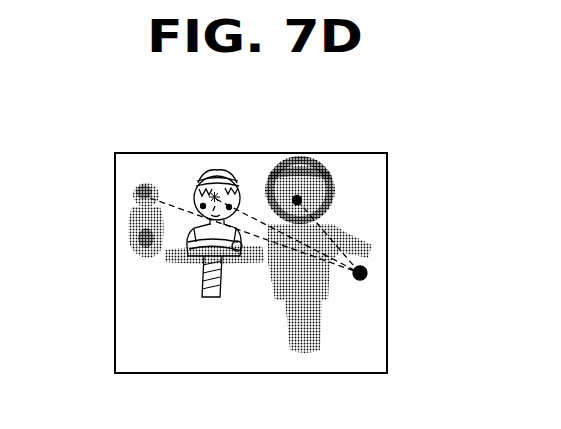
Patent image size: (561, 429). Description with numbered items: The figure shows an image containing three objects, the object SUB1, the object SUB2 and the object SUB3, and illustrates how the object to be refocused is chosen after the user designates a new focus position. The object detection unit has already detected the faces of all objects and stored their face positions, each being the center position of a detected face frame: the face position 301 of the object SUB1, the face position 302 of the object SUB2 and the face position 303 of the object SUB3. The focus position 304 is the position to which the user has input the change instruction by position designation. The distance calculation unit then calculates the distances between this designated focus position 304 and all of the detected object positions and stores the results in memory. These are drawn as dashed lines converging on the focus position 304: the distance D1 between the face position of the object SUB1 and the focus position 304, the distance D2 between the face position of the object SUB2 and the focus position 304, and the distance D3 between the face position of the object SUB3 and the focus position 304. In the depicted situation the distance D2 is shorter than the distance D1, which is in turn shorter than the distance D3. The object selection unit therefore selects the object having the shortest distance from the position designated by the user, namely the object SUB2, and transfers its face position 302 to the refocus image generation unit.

The face position 301 is at (203, 298).
The face position 302 is at (297, 200).
The face position 303 is at (140, 203).
The focus position 304 is at (367, 275).
The distance D1 is at (298, 242).
The distance D2 is at (315, 222).
The distance D3 is at (183, 210).
The object SUB1 is at (221, 172).
The object SUB2 is at (317, 160).
The object SUB3 is at (150, 187).